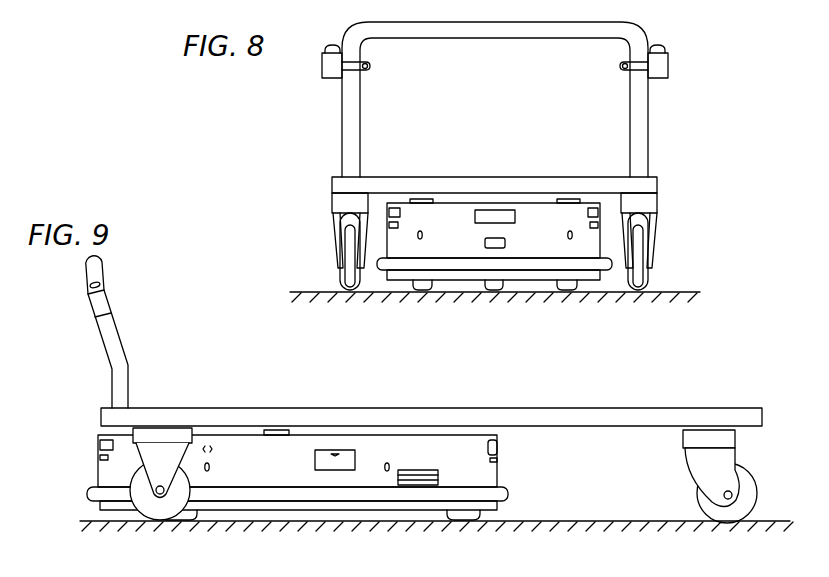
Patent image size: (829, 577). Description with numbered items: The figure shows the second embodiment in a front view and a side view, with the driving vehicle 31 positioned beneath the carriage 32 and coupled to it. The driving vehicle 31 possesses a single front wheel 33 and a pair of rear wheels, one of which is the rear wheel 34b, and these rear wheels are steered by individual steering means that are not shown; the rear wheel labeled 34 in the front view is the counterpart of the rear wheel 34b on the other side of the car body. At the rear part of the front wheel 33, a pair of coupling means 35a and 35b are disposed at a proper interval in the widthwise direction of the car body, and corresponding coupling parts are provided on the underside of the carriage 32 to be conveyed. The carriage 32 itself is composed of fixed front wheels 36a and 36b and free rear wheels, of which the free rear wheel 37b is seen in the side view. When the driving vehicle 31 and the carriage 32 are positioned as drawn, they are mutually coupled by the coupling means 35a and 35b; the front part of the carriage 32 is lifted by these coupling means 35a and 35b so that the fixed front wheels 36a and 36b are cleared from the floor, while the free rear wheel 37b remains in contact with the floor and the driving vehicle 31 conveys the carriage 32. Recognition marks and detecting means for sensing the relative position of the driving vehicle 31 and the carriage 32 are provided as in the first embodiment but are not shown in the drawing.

In FIG. 8, the driving vehicle 31 is at (590, 283).
In FIG. 9, the driving vehicle 31 is at (278, 508).
In FIG. 8, the carriage 32 is at (471, 176).
In FIG. 9, the carriage 32 is at (232, 406).
In FIG. 8, the front wheel 33 is at (492, 291).
In FIG. 8, the left support roller 34 is at (423, 291).
In FIG. 8, the rear wheel 34b is at (567, 291).
In FIG. 8, the coupling means 35a is at (423, 198).
In FIG. 8, the coupling means 35b is at (567, 198).
In FIG. 9, the coupling means 35b is at (282, 426).
In FIG. 8, the fixed front wheel 36a is at (348, 290).
In FIG. 8, the fixed front wheel 36b is at (638, 290).
In FIG. 9, the fixed front wheel 36b is at (163, 513).
In FIG. 9, the free rear wheel 37b is at (718, 508).